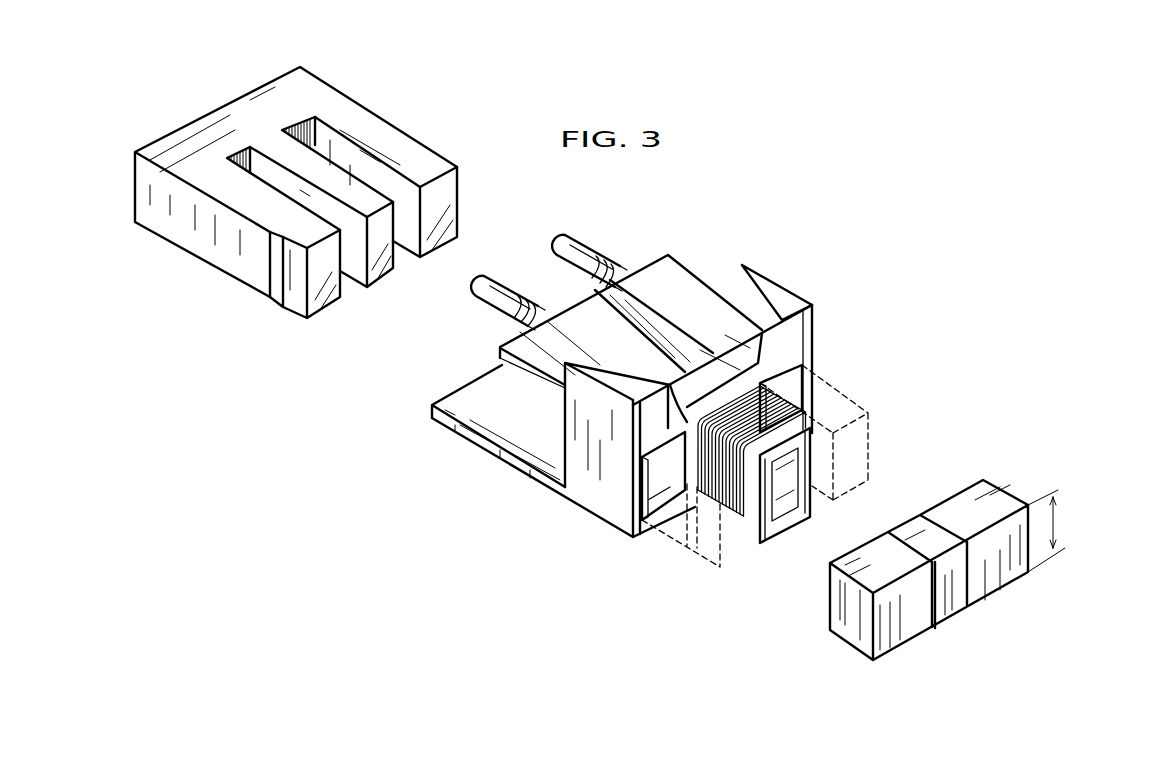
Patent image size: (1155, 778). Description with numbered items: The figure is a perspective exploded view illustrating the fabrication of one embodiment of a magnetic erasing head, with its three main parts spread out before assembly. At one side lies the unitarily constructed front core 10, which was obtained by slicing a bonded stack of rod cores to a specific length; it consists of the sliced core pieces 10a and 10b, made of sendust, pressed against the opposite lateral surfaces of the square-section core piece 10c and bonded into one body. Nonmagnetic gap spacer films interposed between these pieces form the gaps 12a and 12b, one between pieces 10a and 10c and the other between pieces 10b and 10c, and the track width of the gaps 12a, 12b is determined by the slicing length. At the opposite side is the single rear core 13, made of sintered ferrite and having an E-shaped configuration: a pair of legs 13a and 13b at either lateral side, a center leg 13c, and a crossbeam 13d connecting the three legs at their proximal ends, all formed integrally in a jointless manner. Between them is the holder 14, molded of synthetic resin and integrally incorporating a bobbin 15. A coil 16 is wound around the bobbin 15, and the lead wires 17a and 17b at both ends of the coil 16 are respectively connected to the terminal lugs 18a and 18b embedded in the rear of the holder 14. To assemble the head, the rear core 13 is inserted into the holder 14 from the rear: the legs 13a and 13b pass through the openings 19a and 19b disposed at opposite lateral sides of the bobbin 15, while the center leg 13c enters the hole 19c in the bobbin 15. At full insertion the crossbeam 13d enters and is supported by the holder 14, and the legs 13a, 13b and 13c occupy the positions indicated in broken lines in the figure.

The front core 10 is at (990, 480).
The rod-formed core 10a is at (877, 650).
The rod-formed core 10b is at (1007, 570).
The square rod-shaped core 10c is at (953, 608).
The gap 12a is at (932, 607).
The gap 12b is at (967, 582).
The rear core 13 is at (339, 86).
The leg 13a is at (255, 283).
The leg 13b is at (412, 140).
The center leg 13c is at (383, 275).
The crossbeam 13d is at (213, 112).
The holder 14 is at (707, 269).
The bobbin 15 is at (770, 542).
The coil 16 is at (737, 517).
The lead wire 17a is at (608, 347).
The lead wire 17b is at (692, 338).
The terminal lug 18a is at (502, 290).
The terminal lug 18b is at (587, 252).
The opening 19a is at (628, 523).
The opening 19b is at (793, 387).
The hole 19c is at (783, 512).